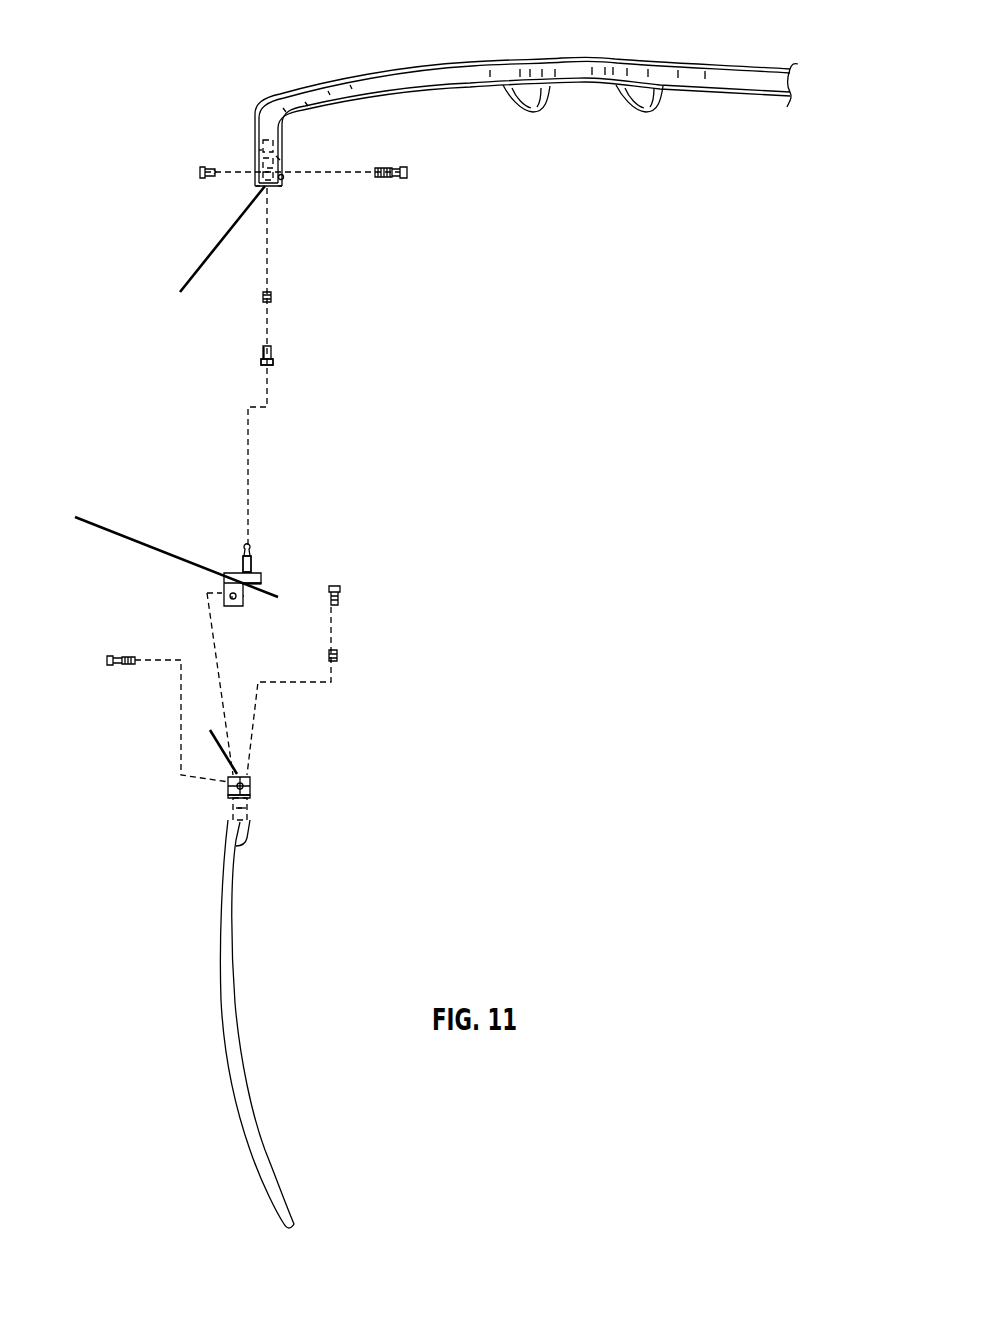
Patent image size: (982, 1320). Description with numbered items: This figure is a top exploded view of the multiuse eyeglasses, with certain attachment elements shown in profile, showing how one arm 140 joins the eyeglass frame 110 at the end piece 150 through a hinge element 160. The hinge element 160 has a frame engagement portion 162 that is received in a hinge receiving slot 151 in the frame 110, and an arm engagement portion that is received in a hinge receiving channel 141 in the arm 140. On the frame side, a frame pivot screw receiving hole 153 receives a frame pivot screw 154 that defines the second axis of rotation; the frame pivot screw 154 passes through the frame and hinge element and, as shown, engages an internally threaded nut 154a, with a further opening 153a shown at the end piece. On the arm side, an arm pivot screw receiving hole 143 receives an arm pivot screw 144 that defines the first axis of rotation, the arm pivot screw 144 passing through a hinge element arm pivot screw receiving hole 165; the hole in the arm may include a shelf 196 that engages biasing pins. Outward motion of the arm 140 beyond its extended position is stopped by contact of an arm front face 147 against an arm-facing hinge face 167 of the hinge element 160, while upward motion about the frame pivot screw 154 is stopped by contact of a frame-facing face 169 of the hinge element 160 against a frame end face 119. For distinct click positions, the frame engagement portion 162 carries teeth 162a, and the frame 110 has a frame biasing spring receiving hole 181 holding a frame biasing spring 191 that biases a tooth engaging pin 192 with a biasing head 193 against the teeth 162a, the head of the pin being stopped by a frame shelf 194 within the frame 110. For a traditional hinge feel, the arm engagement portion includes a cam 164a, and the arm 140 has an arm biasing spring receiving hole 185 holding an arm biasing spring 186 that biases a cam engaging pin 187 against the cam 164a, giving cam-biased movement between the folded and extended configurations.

The eyeglass frame 110 is at (762, 62).
The frame end face 119 is at (213, 256).
The arm 140 is at (232, 1060).
The hinge receiving channel 141 is at (230, 792).
The arm pivot screw receiving hole 143 is at (250, 778).
The arm pivot screw 144 is at (130, 666).
The arm front face 147 is at (211, 741).
The end piece 150 is at (264, 148).
The hinge receiving slot 151 is at (281, 188).
The frame pivot screw receiving hole 153 is at (283, 178).
The hinge block lower opening 153a is at (258, 188).
The frame pivot screw 154 is at (410, 172).
The internally threaded nut 154a is at (200, 170).
The hinge element 160 is at (223, 580).
The frame engagement portion 162 is at (243, 572).
The teeth 162a is at (252, 556).
The cam 164a is at (245, 597).
The hinge element arm pivot screw receiving hole 165 is at (233, 597).
The arm-facing hinge face 167 is at (283, 599).
The frame-facing face 169 is at (154, 544).
The frame biasing spring receiving hole 181 is at (262, 150).
The arm biasing spring receiving hole 185 is at (252, 810).
The arm biasing spring 186 is at (342, 655).
The cam engaging pin 187 is at (340, 595).
The frame biasing spring 191 is at (272, 297).
The tooth engaging pin 192 is at (273, 355).
The biasing head 193 is at (275, 364).
The frame shelf 194 is at (276, 160).
The shelf 196 is at (234, 805).